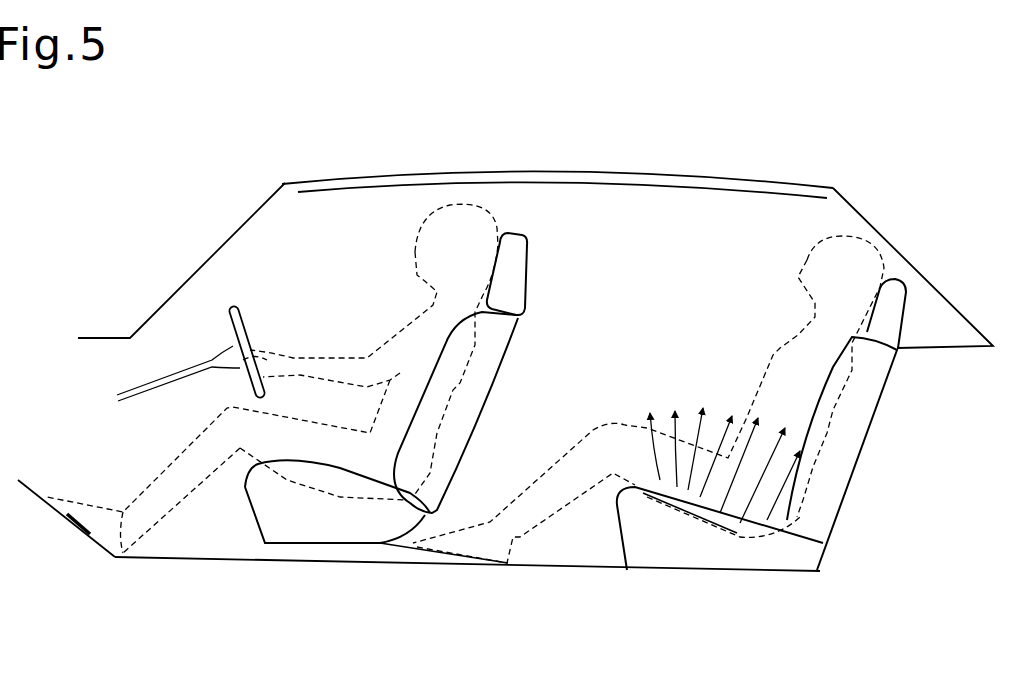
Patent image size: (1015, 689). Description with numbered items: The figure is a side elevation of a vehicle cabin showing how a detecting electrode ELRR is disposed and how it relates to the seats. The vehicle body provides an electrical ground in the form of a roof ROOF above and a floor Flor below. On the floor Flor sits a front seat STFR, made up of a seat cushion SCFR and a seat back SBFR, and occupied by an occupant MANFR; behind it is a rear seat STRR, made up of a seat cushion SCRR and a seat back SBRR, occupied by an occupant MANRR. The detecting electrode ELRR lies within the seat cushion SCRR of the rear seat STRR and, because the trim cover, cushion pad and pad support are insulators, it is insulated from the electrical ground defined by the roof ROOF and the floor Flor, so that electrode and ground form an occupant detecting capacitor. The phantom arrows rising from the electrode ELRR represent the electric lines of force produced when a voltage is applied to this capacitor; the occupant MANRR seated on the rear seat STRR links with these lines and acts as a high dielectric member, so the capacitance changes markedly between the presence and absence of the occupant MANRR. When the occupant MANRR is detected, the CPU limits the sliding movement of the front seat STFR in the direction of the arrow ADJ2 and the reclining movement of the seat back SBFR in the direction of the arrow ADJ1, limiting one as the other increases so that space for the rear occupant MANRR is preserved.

The roof ROOF is at (733, 172).
The front seat STFR is at (539, 262).
The front seat occupant MANFR is at (397, 323).
The reclining adjustment direction arrow ADJ1 is at (486, 352).
The front seat back SBFR is at (472, 418).
The front seat cushion SCFR is at (262, 510).
The sliding adjustment direction arrow ADJ2 is at (337, 526).
The floor Flor is at (290, 560).
The rear seat occupant MANRR is at (772, 354).
The rear seat STRR is at (890, 392).
The rear seat back SBRR is at (850, 445).
The detecting electrode ELRR is at (713, 530).
The rear seat cushion SCRR is at (792, 560).